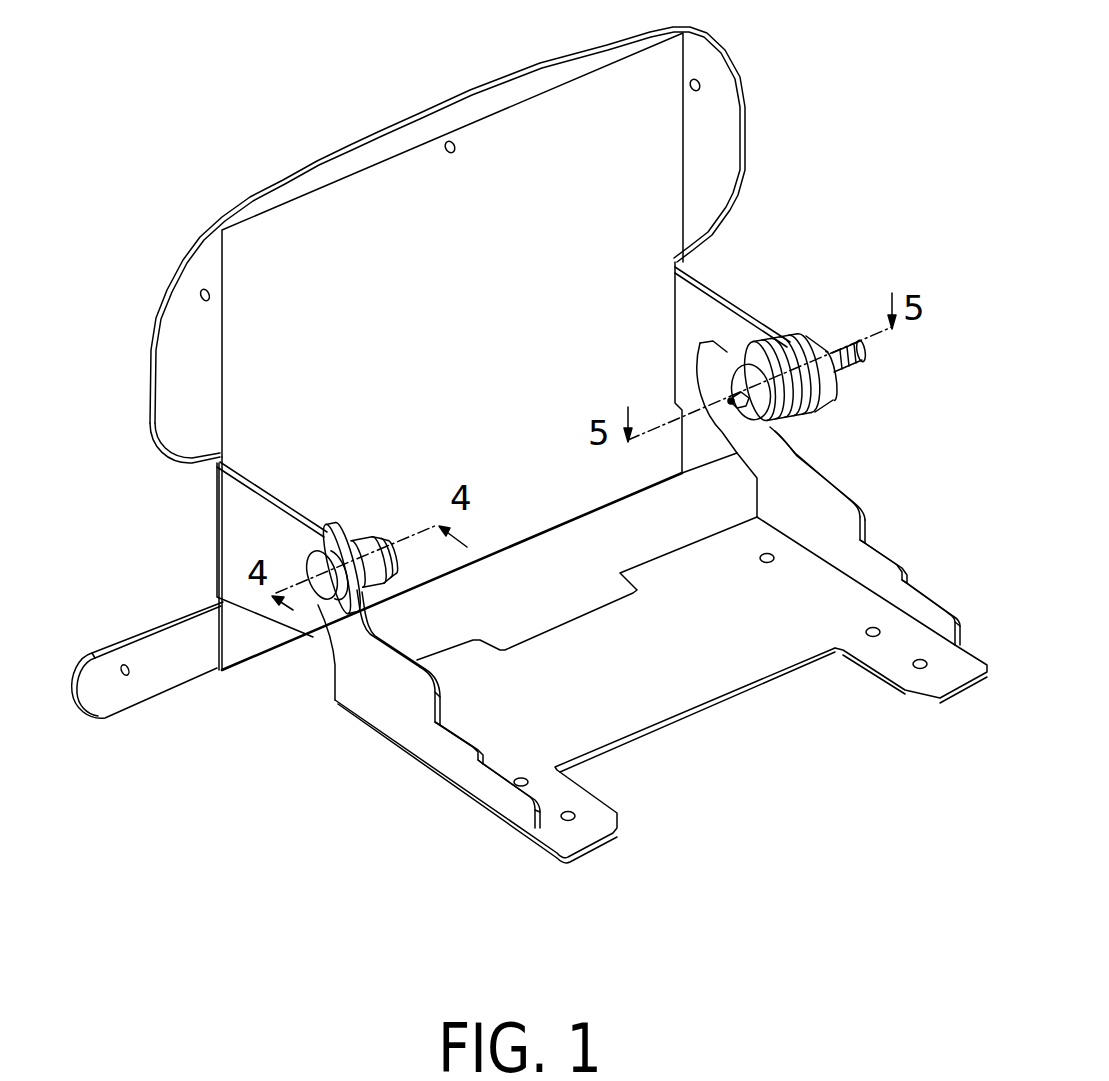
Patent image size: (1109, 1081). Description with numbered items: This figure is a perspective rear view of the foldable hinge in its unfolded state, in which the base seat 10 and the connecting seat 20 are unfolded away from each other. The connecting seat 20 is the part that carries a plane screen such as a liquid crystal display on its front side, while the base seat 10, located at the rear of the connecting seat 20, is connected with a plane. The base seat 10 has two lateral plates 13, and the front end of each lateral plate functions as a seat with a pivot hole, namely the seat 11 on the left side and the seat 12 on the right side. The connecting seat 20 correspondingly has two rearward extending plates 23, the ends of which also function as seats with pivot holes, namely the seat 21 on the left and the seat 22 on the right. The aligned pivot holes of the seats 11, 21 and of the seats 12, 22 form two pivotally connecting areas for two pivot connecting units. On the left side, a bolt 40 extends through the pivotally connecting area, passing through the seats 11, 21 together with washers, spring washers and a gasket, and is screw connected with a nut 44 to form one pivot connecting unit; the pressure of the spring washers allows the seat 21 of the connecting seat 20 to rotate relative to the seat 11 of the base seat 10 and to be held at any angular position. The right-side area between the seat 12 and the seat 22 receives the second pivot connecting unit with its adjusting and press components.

The base seat 10 is at (660, 682).
The seat with a pivot hole 11 is at (340, 633).
The seat with a pivot hole 12 is at (795, 450).
The lateral plate 13 is at (410, 703).
The connecting seat 20 is at (382, 203).
The seat with a pivot hole 21 is at (337, 603).
The seat with a pivot hole 22 is at (790, 340).
The rearward extending plate 23 is at (240, 503).
The bolt 40 is at (330, 587).
The nut 44 is at (370, 530).